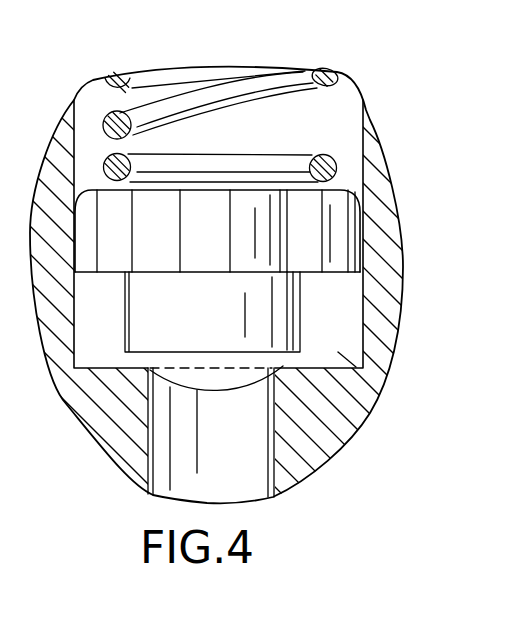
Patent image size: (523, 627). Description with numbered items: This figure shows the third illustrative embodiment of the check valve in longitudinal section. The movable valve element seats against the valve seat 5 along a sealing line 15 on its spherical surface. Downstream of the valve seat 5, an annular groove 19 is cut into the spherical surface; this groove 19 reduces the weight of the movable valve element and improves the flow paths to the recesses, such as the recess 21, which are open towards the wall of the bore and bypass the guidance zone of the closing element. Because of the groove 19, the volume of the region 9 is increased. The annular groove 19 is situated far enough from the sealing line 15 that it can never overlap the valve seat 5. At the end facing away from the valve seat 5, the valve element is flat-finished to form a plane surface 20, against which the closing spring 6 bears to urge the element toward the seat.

The valve seat 5 is at (262, 378).
The closing spring 6 is at (326, 69).
The region 9 is at (376, 398).
The sealing line 15 is at (216, 368).
The annular groove 19 is at (258, 317).
The plane surface 20 is at (207, 194).
The recess 21 is at (310, 222).